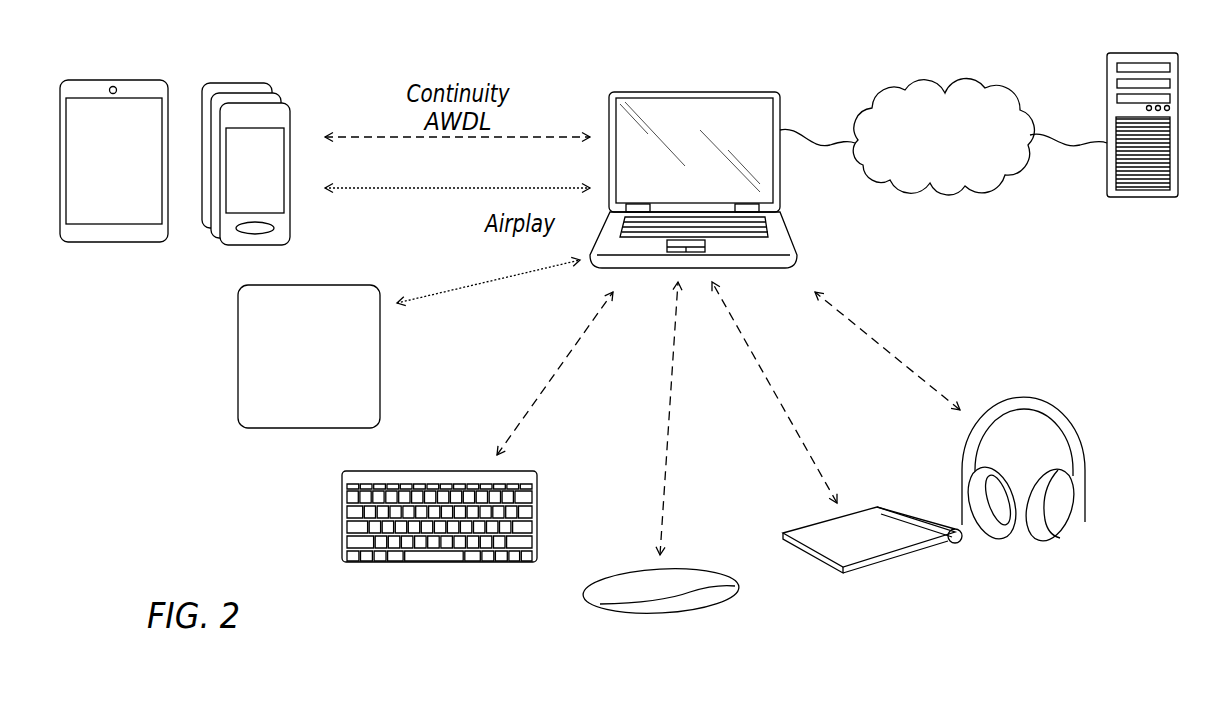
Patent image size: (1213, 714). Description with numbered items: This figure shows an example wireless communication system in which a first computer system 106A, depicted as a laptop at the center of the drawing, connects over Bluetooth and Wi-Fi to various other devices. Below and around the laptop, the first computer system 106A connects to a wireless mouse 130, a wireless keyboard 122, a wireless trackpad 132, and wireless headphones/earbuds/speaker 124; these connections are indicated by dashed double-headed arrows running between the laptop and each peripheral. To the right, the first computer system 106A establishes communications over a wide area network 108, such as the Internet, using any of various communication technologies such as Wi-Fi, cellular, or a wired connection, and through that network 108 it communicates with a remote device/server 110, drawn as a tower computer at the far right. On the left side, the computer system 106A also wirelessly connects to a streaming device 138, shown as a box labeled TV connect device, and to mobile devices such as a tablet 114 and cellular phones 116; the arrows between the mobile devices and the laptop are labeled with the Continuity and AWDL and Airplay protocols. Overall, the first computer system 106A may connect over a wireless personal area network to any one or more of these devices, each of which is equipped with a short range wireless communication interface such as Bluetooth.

The tablet 114 is at (103, 80).
The cellular phone 116 is at (239, 83).
The first computer system 106A is at (693, 92).
The wide area network 108 is at (937, 86).
The remote device/server 110 is at (1141, 53).
The streaming device 138 is at (290, 430).
The wireless keyboard 122 is at (435, 563).
The wireless mouse 130 is at (633, 613).
The wireless trackpad 132 is at (848, 570).
The wireless headphones/earbuds/speaker 124 is at (1018, 397).